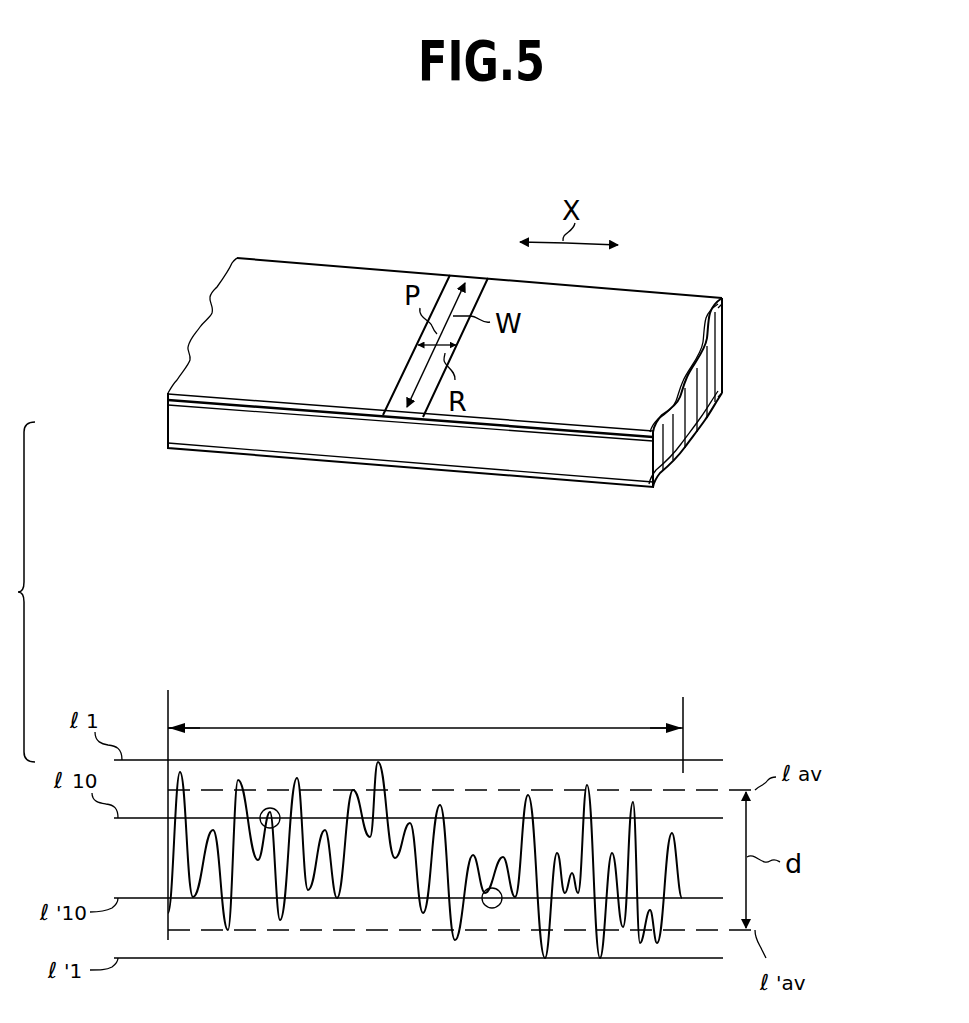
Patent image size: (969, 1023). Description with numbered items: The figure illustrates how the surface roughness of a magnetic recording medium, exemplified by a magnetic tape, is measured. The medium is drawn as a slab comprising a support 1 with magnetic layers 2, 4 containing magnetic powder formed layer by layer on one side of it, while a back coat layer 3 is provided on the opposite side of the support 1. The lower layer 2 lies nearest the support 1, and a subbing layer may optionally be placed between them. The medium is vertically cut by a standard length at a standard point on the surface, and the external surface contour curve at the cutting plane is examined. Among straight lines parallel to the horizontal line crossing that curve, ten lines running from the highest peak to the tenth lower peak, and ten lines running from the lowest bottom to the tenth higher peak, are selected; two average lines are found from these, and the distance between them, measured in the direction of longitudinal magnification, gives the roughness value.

The support 1 is at (722, 350).
The magnetic layer 2 is at (668, 307).
The back coat layer 3 is at (722, 396).
The magnetic layer 4 is at (722, 304).